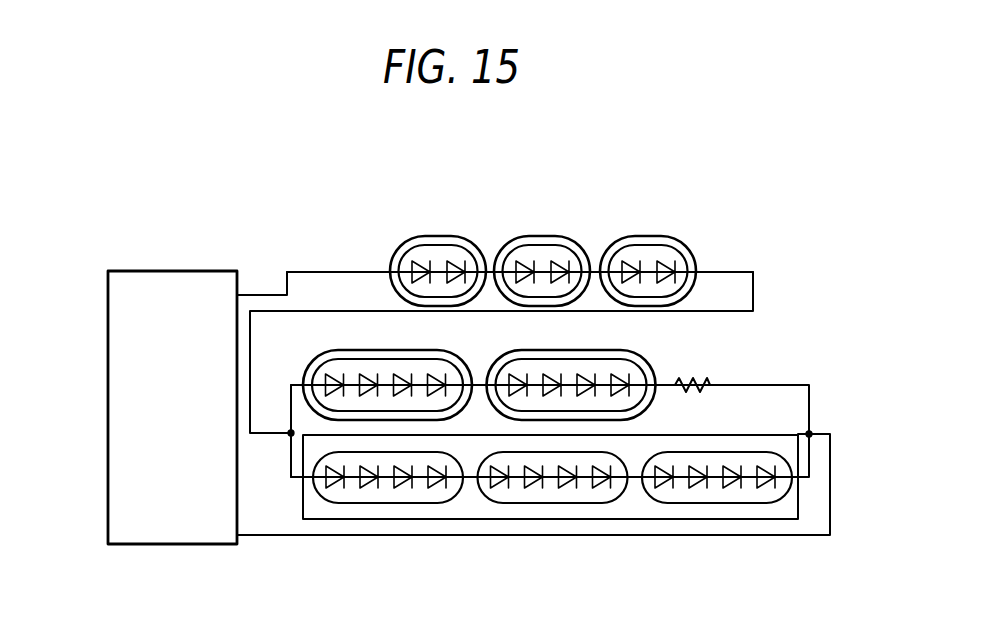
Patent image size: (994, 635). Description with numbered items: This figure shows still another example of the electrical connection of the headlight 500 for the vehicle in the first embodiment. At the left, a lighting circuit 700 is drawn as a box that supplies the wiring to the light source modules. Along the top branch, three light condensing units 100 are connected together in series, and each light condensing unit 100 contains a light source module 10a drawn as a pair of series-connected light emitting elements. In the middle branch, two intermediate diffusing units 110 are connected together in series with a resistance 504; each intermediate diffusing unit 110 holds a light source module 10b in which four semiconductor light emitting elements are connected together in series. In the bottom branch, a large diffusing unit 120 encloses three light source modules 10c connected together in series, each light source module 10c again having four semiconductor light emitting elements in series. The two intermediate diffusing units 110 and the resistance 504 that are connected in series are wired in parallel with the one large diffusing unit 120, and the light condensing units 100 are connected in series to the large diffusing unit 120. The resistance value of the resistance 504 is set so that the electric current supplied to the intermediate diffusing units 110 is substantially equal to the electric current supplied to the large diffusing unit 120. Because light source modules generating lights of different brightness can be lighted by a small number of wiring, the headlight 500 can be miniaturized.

The headlight for the vehicle 500 is at (122, 166).
The lighting circuit 700 is at (180, 271).
The light condensing unit 100 is at (427, 237).
The light emitting element group (first) 10a is at (438, 245).
The intermediate diffusing unit 110 is at (388, 350).
The light source module 10b is at (397, 358).
The resistor 504 is at (704, 378).
The large diffusing unit 120 is at (728, 520).
The light source module 10c is at (365, 504).